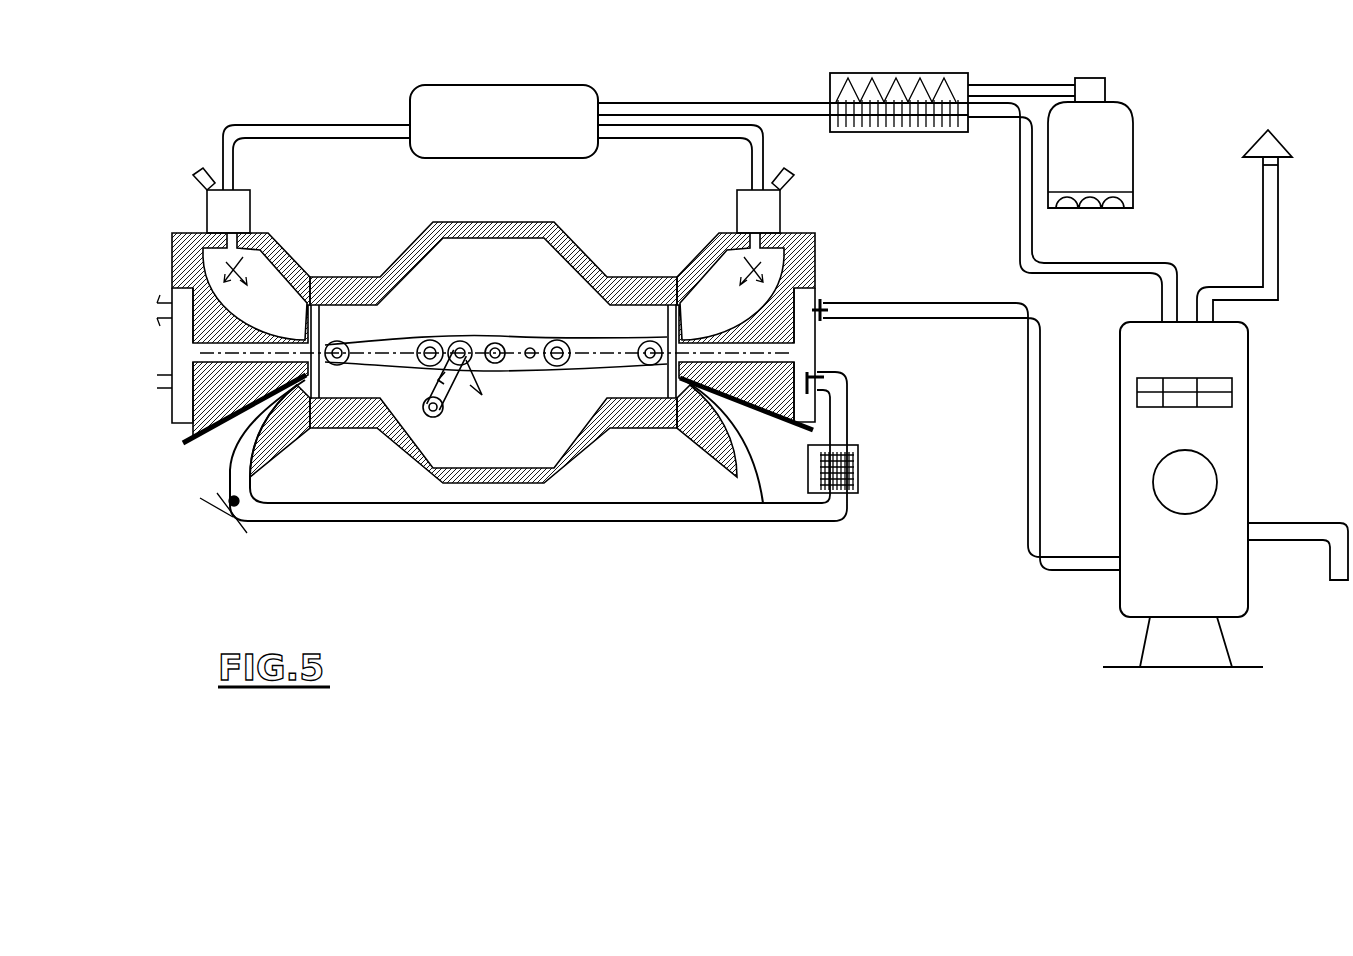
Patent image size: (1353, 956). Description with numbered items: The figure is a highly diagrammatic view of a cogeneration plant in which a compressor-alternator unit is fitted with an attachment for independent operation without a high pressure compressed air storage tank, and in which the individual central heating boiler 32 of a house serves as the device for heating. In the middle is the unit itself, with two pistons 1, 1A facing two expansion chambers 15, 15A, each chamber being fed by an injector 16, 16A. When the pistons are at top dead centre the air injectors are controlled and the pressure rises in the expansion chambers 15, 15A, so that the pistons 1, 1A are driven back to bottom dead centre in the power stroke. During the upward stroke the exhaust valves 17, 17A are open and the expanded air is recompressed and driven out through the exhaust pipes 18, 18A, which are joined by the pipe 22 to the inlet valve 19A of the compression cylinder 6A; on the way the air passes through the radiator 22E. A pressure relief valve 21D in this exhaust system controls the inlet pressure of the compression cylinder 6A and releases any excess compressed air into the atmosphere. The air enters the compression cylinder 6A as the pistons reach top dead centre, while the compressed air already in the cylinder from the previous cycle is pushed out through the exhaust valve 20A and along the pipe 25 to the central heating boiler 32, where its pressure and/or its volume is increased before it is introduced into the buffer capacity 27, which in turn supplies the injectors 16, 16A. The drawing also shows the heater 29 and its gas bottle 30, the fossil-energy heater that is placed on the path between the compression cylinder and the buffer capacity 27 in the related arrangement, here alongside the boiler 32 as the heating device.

The piston 1 is at (340, 285).
The piston 1A is at (650, 278).
The expansion chamber 15 is at (265, 268).
The expansion chamber 15A is at (712, 303).
The injector 16 is at (233, 213).
The injector 16A is at (750, 210).
The compression cylinder 6A is at (810, 233).
The exhaust valve 17 is at (183, 442).
The exhaust valve 17A is at (813, 432).
The exhaust pipe 18 is at (232, 458).
The exhaust pipe 18A is at (780, 478).
The inlet valve 19A is at (817, 375).
The exhaust valve 20A is at (823, 318).
The pressure relief valve 21D is at (232, 500).
The pipe 22 is at (537, 522).
The radiator 22E is at (856, 487).
The pipe 25 is at (990, 302).
The buffer capacity 27 is at (504, 121).
The heater 29 is at (907, 88).
The gas bottle 30 is at (1100, 153).
The central heating boiler 32 is at (1140, 582).